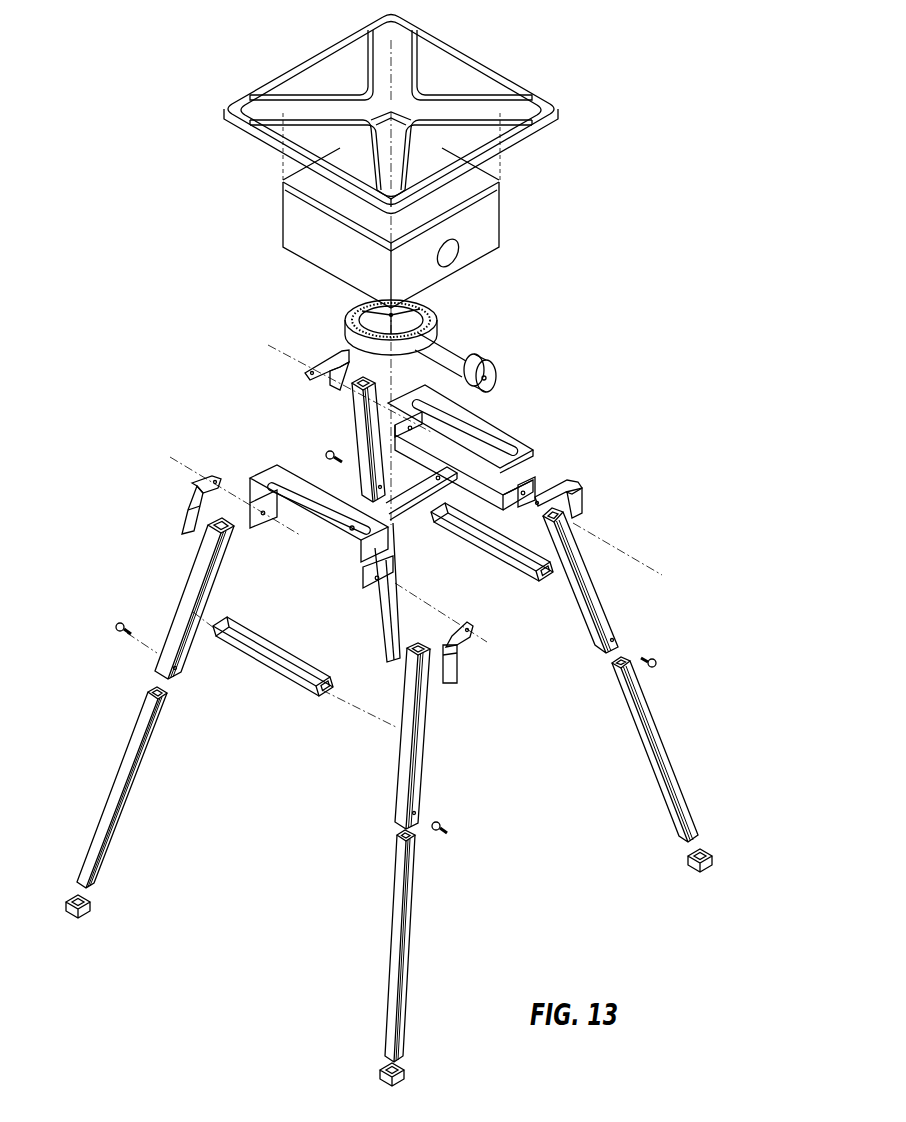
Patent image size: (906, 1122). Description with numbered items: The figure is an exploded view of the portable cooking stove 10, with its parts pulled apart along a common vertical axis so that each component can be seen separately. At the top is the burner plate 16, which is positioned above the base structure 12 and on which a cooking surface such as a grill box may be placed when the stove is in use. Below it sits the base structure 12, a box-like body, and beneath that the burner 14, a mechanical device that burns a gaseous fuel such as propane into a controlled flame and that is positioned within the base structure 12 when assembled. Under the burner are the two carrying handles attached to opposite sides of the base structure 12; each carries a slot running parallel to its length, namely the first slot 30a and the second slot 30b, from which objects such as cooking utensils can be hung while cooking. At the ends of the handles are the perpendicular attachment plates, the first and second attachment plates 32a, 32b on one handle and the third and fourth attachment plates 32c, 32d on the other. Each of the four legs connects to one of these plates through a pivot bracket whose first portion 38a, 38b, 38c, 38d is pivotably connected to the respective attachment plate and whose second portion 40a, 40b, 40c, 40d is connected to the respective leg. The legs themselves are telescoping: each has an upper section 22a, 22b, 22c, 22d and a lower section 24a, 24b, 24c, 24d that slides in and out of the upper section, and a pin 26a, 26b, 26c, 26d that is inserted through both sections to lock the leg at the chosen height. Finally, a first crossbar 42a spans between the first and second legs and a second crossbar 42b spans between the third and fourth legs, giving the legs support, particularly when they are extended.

The stove 10 is at (656, 80).
The base structure 12 is at (495, 217).
The burner 14 is at (436, 316).
The burner plate 16 is at (492, 67).
The upper section 22a is at (402, 753).
The upper section 22b is at (185, 592).
The upper section 22c is at (598, 594).
The upper section 22d is at (355, 420).
The lower section 24a is at (390, 917).
The lower section 24b is at (120, 760).
The lower section 24c is at (653, 727).
The lower section 24d is at (395, 583).
The pin 26a is at (441, 831).
The pin 26b is at (116, 626).
The pin 26c is at (660, 662).
The pin 26d is at (326, 455).
The first slot 30a is at (272, 468).
The second slot 30b is at (513, 433).
The first attachment plate 32a is at (370, 600).
The second attachment plate 32b is at (263, 524).
The third attachment plate 32c is at (537, 478).
The fourth attachment plate 32d is at (430, 430).
The first portion 38a is at (473, 636).
The first portion 38b is at (197, 483).
The first portion 38c is at (572, 480).
The first portion 38d is at (320, 362).
The second portion 40a is at (458, 670).
The second portion 40b is at (186, 512).
The second portion 40c is at (583, 497).
The second portion 40d is at (338, 390).
The first crossbar 42a is at (266, 666).
The second crossbar 42b is at (493, 553).